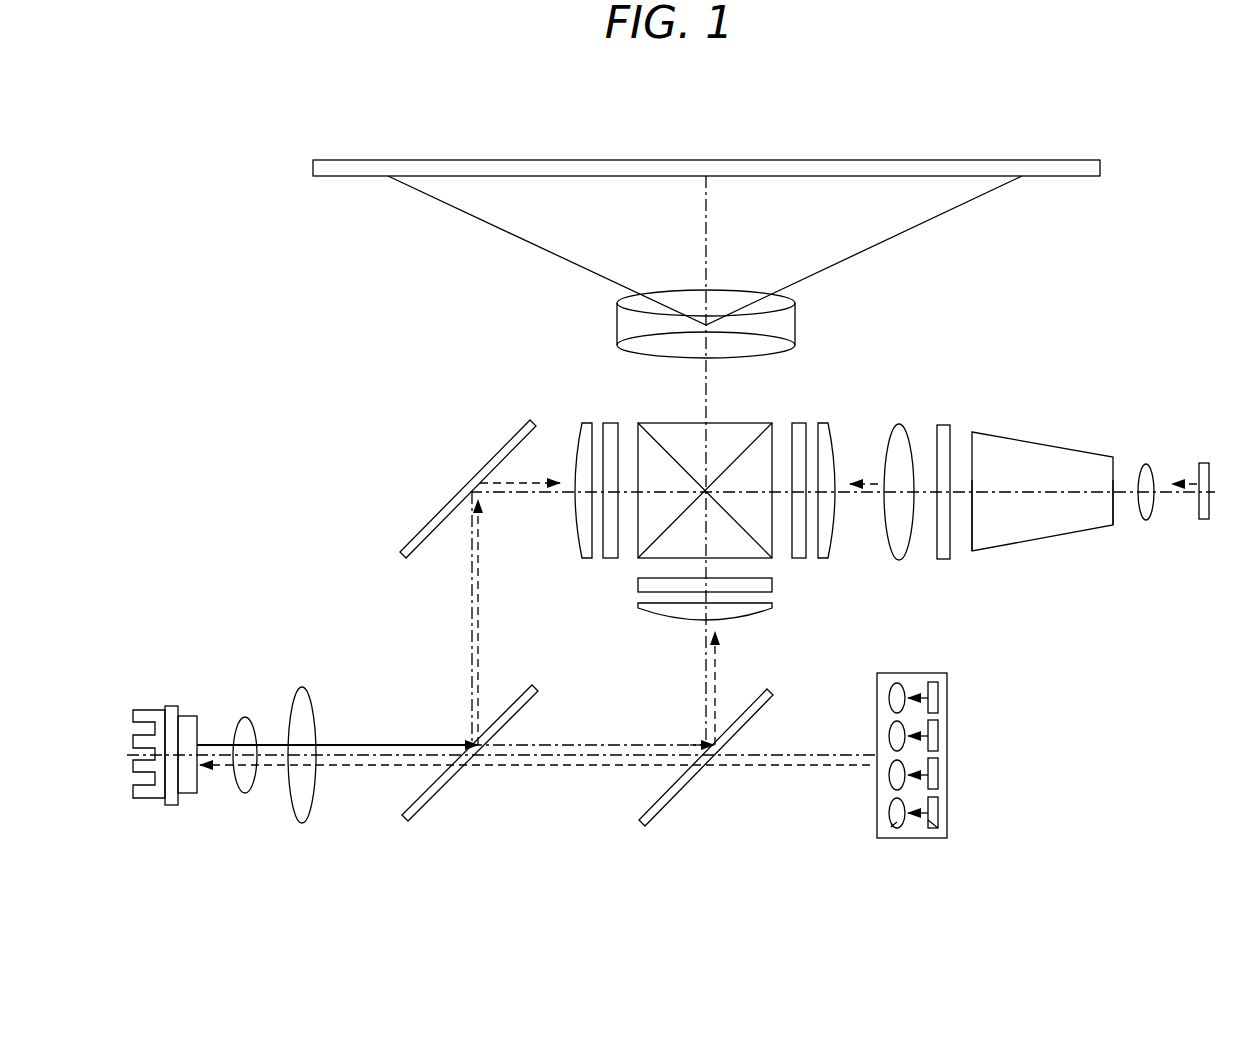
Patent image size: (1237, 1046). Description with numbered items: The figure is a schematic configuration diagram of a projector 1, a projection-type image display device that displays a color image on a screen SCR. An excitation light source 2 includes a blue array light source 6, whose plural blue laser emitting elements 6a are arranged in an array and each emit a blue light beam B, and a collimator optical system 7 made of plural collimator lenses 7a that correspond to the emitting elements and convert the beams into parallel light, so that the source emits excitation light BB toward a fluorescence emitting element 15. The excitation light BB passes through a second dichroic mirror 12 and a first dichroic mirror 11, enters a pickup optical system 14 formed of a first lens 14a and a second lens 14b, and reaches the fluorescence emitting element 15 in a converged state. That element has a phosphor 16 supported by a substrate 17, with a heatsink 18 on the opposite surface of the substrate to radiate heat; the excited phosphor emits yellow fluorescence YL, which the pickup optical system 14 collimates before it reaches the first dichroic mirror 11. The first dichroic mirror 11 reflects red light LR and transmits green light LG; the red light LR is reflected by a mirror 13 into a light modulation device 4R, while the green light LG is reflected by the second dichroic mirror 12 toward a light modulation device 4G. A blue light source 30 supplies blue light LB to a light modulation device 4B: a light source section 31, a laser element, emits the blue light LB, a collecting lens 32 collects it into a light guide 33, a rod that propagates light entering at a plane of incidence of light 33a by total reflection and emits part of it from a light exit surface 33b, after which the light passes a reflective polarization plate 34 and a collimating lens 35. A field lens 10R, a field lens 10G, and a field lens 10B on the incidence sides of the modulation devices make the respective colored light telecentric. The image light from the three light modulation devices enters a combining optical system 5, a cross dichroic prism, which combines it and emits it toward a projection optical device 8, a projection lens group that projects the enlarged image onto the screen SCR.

The projector 1 is at (1102, 152).
The screen SCR is at (1067, 177).
The projection optical device 8 is at (796, 320).
The blue light source 30 is at (1174, 356).
The mirror 13 is at (446, 506).
The red light LR is at (481, 541).
The field lens 10R is at (588, 432).
The light modulation device 4R is at (613, 432).
The combining optical system 5 is at (727, 432).
The light modulation device 4B is at (800, 432).
The field lens 10B is at (823, 432).
The light modulation device 4G is at (640, 586).
The field lens 10G is at (648, 608).
The green light LG is at (719, 645).
The collimating lens 35 is at (897, 432).
The reflective polarization plate 34 is at (942, 432).
The light guide 33 is at (1017, 443).
The light exit surface 33b is at (972, 526).
The plane of incidence of light 33a is at (1116, 508).
The collecting lens 32 is at (1146, 465).
The light source section 31 is at (1203, 465).
The blue light LB is at (860, 481).
The fluorescence YL is at (377, 742).
The excitation light BB is at (797, 768).
The first dichroic mirror 11 is at (416, 812).
The second dichroic mirror 12 is at (662, 808).
The excitation light source 2 is at (914, 759).
The collimator optical system 7 is at (890, 673).
The blue array light source 6 is at (935, 673).
The blue light beam B is at (920, 696).
The collimator lens 7a is at (893, 824).
The blue laser emitting element 6a is at (936, 826).
The fluorescence emitting element 15 is at (170, 772).
The heatsink 18 is at (145, 712).
The substrate 17 is at (170, 707).
The phosphor 16 is at (188, 717).
The pickup optical system 14 is at (270, 807).
The first lens 14a is at (248, 784).
The second lens 14b is at (293, 785).